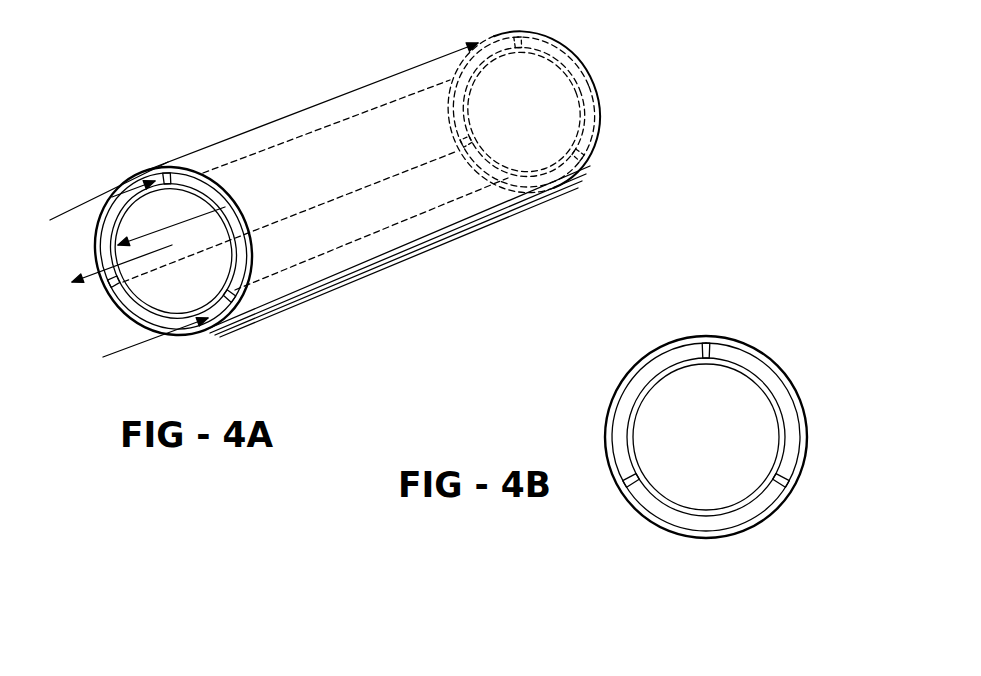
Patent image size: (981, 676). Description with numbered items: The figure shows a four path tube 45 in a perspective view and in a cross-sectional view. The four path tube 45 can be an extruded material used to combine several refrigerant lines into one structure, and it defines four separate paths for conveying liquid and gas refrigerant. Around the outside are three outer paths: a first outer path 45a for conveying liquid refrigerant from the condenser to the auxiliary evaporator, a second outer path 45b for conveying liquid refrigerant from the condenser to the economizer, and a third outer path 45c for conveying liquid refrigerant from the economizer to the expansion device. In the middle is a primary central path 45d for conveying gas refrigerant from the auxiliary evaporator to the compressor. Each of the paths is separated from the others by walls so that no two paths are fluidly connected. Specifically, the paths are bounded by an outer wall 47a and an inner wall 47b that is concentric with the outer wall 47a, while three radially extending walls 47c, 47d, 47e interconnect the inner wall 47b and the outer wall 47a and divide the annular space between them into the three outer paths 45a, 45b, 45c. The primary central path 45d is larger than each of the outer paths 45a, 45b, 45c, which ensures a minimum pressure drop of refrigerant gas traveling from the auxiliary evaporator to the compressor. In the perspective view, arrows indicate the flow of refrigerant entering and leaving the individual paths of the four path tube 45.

In FIG. 4A, the four path tube 45 is at (315, 335).
In FIG. 4A, the first outer path 45a is at (95, 202).
In FIG. 4B, the first outer path 45a is at (631, 384).
In FIG. 4A, the second outer path 45b is at (138, 345).
In FIG. 4B, the second outer path 45b is at (662, 515).
In FIG. 4A, the third outer path 45c is at (178, 222).
In FIG. 4B, the third outer path 45c is at (782, 396).
In FIG. 4A, the primary central path 45d is at (88, 286).
In FIG. 4B, the primary central path 45d is at (712, 420).
In FIG. 4B, the outer wall 47a is at (803, 398).
In FIG. 4B, the inner wall 47b is at (728, 517).
In FIG. 4B, the radially extending wall 47c is at (627, 476).
In FIG. 4B, the radially extending wall 47d is at (703, 347).
In FIG. 4B, the radially extending wall 47e is at (784, 487).